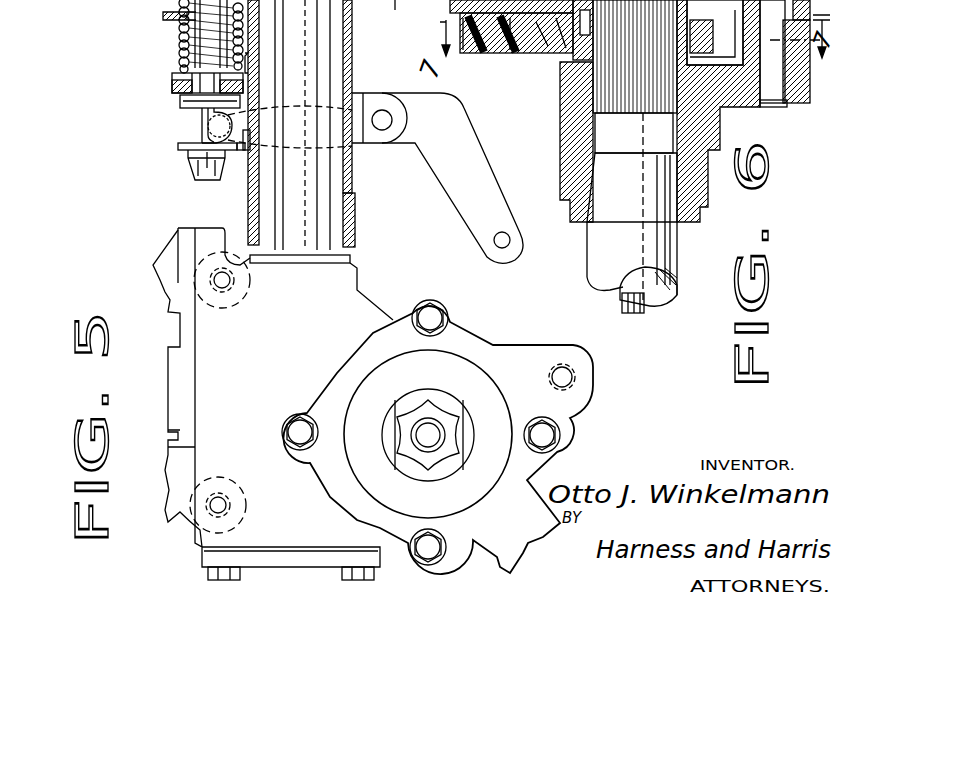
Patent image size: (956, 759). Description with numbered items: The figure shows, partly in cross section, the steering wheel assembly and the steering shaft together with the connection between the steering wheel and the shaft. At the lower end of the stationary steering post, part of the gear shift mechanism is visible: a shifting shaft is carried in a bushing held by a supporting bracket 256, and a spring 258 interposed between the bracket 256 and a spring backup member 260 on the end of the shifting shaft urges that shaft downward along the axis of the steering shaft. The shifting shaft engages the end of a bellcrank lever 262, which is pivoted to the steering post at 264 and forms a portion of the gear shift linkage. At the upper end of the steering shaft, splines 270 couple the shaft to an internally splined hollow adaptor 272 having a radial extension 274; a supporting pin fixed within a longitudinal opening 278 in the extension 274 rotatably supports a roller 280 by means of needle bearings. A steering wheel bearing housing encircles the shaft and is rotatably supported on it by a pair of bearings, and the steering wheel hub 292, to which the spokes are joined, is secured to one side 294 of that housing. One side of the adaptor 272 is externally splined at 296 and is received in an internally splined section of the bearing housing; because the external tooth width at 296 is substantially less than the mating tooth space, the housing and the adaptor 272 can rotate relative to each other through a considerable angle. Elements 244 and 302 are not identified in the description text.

In FIG. 5, the push rod 244 is at (386, 2).
In FIG. 5, the supporting bracket 256 is at (168, 22).
In FIG. 5, the spring 258 is at (177, 64).
In FIG. 5, the spring backup member 260 is at (176, 97).
In FIG. 5, the bellcrank lever 262 is at (413, 145).
In FIG. 5, the pivot 264 is at (382, 131).
In FIG. 6, the splines 270 is at (642, 95).
In FIG. 6, the hollow adaptor 272 is at (577, 158).
In FIG. 6, the radial extension 274 is at (800, 72).
In FIG. 6, the longitudinal opening 278 is at (794, 103).
In FIG. 6, the roller 280 is at (607, 262).
In FIG. 5, the steering wheel hub 292 is at (502, 25).
In FIG. 5, the side of the steering wheel bearing housing 294 is at (484, 22).
In FIG. 5, the external splines 296 is at (565, 58).
In FIG. 5, the seal assembly 302 is at (446, 20).